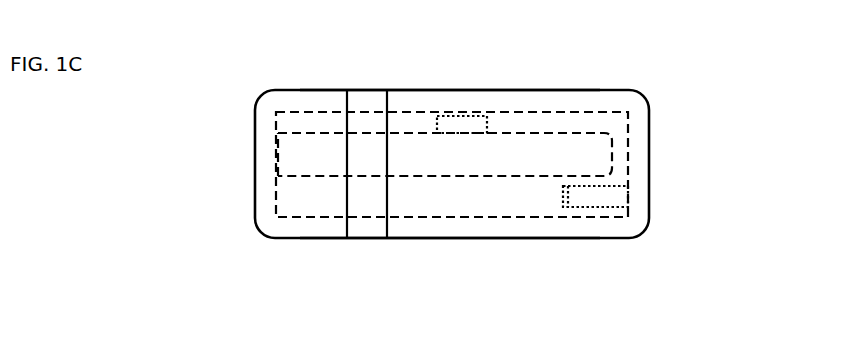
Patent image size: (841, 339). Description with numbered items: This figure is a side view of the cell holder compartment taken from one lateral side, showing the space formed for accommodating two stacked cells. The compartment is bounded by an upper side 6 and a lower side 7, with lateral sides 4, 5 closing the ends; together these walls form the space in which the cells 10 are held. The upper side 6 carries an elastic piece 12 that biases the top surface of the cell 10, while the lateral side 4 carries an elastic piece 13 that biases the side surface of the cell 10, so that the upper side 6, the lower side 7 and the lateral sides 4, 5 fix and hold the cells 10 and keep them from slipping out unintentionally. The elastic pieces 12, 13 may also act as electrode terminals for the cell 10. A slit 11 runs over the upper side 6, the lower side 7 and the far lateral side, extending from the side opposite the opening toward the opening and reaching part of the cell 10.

The lateral side 4 is at (649, 134).
The lateral side 5 is at (255, 167).
The upper side 6 is at (535, 88).
The lower side 7 is at (533, 239).
The cell 10 is at (312, 148).
The slit 11 is at (349, 152).
The elastic piece 12 is at (465, 132).
The elastic piece 13 is at (605, 198).